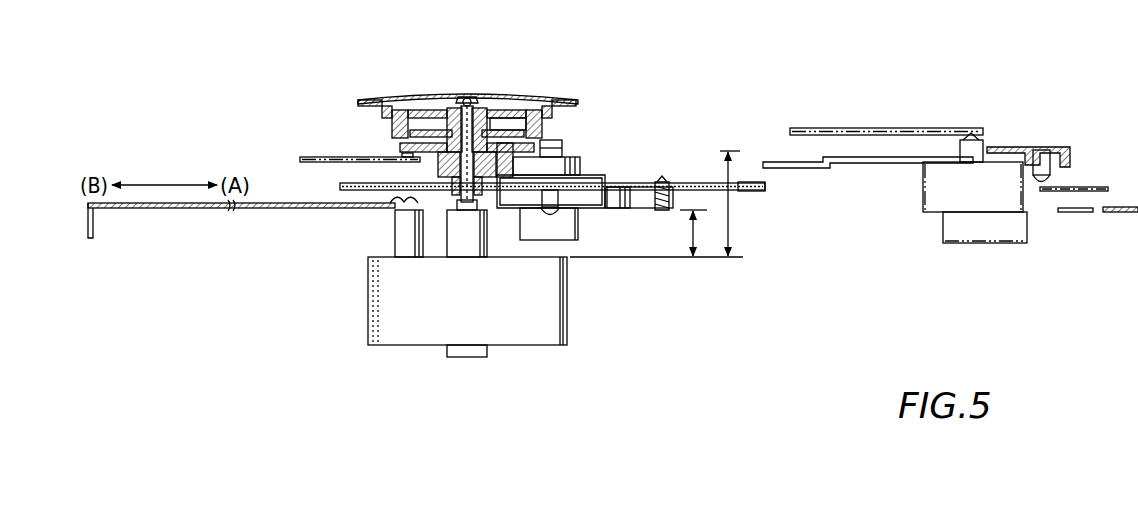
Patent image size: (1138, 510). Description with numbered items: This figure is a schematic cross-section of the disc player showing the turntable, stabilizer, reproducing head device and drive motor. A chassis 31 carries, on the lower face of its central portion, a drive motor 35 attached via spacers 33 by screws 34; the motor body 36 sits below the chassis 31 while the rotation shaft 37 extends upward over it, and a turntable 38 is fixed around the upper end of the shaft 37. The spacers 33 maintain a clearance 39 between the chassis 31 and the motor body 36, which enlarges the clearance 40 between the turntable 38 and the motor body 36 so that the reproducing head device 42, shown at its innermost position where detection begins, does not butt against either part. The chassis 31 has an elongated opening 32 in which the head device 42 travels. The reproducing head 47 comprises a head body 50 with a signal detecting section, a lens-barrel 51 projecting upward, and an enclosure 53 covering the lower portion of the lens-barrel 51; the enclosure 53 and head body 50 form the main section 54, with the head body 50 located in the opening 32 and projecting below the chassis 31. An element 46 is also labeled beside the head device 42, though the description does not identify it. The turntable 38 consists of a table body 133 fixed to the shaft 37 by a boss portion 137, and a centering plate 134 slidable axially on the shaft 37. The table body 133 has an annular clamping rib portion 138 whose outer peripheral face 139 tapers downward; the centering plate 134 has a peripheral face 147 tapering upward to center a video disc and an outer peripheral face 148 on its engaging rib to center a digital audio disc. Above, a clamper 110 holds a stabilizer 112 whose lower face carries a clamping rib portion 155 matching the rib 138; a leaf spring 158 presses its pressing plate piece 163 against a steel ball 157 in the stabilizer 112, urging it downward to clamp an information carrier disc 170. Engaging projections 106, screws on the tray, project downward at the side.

The chassis 31 is at (148, 210).
The elongated opening 32 is at (1104, 212).
The spacers 33 is at (396, 236).
The screws 34 is at (392, 203).
The drive motor 35 is at (569, 330).
The motor body 36 is at (569, 302).
The rotation shaft 37 is at (462, 230).
The turntable 38 is at (510, 116).
The clearance 39 is at (700, 232).
The clearance 40 is at (730, 208).
The reproducing head device 42 is at (610, 176).
The guide 46 is at (606, 210).
The reproducing head 47 is at (585, 150).
The head body 50 is at (520, 222).
The lens-barrel 51 is at (562, 144).
The enclosure 53 is at (538, 212).
The main section 54 is at (526, 284).
The engaging projections 106 is at (1052, 178).
The clamper 110 is at (365, 86).
The stabilizer 112 is at (415, 110).
The table body 133 is at (440, 162).
The centering plate 134 is at (426, 112).
The boss portion 137 is at (440, 200).
The annular clamping rib portion 138 is at (392, 148).
The outer peripheral face 139 is at (398, 140).
The peripheral face 147 is at (522, 128).
The outer peripheral face 148 is at (500, 122).
The clamping rib portion 155 is at (392, 122).
The steel ball 157 is at (463, 100).
The leaf spring 158 is at (482, 100).
The pressing plate piece 163 is at (468, 103).
The information carrier disc 170 is at (872, 127).